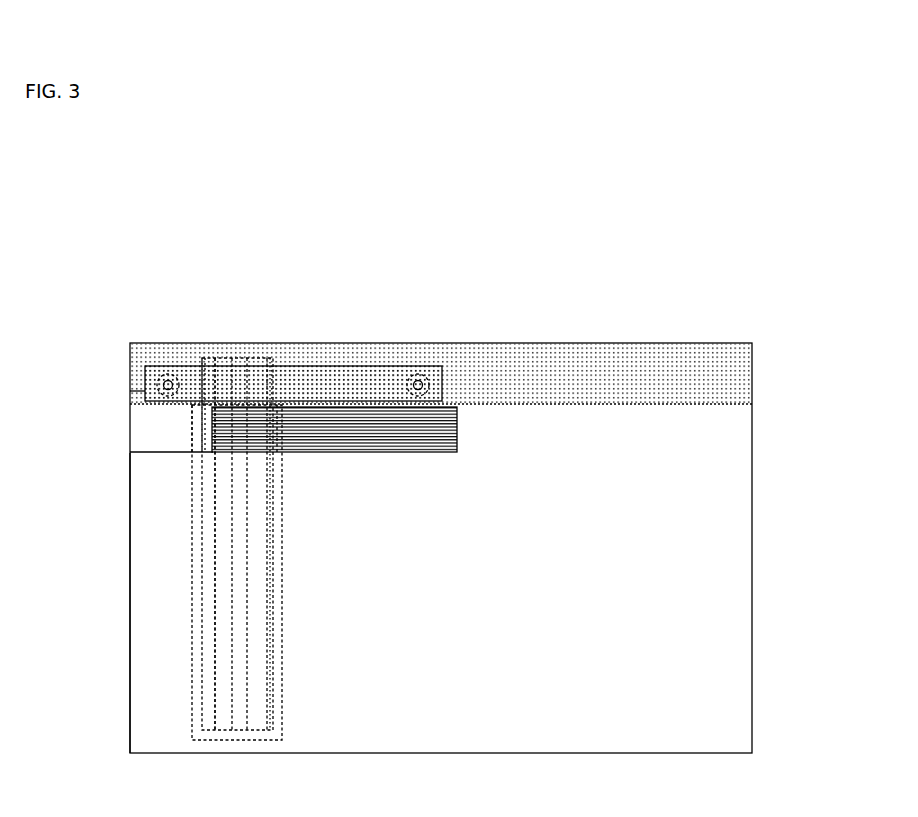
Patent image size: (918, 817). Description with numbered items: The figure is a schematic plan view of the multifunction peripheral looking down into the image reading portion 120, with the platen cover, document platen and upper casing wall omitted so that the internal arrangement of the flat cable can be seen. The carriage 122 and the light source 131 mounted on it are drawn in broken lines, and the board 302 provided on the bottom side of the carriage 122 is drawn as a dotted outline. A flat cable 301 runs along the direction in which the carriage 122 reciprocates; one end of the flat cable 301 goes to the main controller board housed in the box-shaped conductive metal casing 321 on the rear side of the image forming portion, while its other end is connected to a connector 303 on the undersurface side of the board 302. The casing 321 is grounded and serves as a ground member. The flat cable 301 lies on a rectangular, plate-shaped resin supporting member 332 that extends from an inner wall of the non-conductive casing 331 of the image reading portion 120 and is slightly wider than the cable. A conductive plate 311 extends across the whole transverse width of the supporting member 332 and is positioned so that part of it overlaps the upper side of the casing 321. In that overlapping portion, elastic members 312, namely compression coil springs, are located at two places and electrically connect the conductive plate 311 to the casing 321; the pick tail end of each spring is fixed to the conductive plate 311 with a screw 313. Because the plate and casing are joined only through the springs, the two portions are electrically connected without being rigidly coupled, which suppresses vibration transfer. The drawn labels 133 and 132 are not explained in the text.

The image reading portion 120 is at (755, 645).
The casing 321 is at (553, 352).
The conductive plate 311 is at (130, 391).
The elastic member 312 is at (176, 371).
The screw 313 is at (165, 378).
The flat cable 301 is at (458, 437).
The connector 303 is at (190, 441).
The supporting member 332 is at (150, 455).
The casing 331 is at (128, 548).
The light source 131 is at (283, 483).
The board 302 is at (283, 530).
The carriage 122 is at (283, 642).
The wiring lines 133 is at (200, 500).
The wiring 132 is at (175, 544).